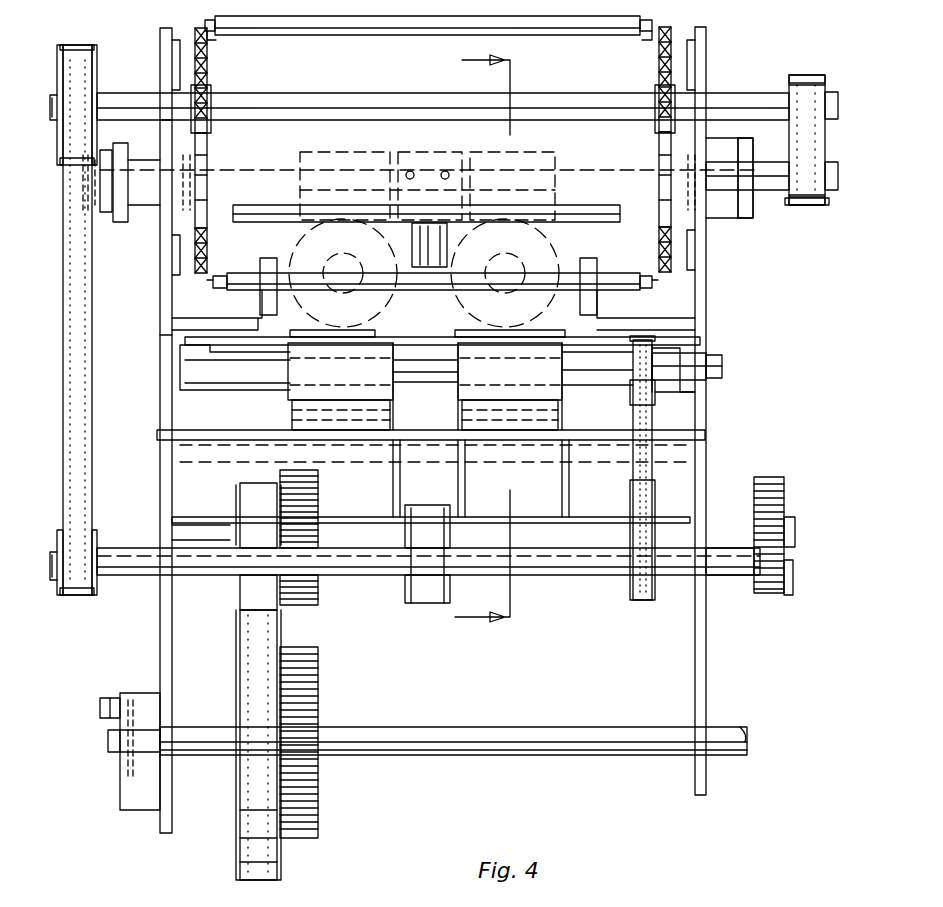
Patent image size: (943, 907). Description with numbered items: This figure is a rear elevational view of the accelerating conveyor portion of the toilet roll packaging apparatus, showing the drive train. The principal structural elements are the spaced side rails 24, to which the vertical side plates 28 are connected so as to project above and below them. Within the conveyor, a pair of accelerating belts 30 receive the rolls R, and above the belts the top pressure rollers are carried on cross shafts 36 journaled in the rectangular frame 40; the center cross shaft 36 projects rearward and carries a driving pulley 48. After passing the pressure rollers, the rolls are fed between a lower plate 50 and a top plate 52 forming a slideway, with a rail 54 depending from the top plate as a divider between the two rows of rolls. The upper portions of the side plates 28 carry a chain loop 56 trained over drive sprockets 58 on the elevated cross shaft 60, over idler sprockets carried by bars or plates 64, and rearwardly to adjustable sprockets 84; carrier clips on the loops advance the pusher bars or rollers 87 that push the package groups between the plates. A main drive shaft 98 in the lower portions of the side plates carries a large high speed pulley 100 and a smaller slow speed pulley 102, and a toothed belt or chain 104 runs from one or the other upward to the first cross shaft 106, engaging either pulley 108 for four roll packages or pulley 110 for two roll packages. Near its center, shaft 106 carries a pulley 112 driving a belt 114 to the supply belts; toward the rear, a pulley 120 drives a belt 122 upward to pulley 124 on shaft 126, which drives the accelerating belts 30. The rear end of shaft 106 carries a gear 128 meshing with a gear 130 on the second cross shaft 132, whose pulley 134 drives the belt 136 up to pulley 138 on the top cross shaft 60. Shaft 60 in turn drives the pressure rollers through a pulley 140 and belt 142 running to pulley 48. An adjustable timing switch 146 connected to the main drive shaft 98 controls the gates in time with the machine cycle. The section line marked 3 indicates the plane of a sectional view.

The section line 3 is at (469, 343).
The side rails 24 is at (693, 353).
The vertical side plates 28 is at (706, 272).
The accelerating belts 30 is at (308, 376).
The cross shafts 36 is at (768, 185).
The rectangular frame 40 is at (742, 135).
The driving pulley 48 is at (822, 205).
The lower plate 50 is at (418, 345).
The top plate 52 is at (268, 214).
The rail 54 is at (432, 240).
The chain loop 56 is at (200, 215).
The drive sprockets 58 is at (210, 80).
The cross shaft 60 is at (350, 110).
The bars or plates 64 is at (178, 52).
The adjustable sprockets 84 is at (198, 270).
The pusher bars or rollers 87 is at (560, 22).
The main drive shaft 98 is at (478, 740).
The high speed pulley 100 is at (240, 865).
The slow speed pulley 102 is at (320, 812).
The toothed belt or chain 104 is at (260, 822).
The first cross shaft 106 is at (195, 520).
The pulley 108 is at (240, 500).
The pulley 110 is at (320, 600).
The pulley 112 is at (415, 520).
The belt 114 is at (410, 610).
The pulley 120 is at (636, 595).
The belt 122 is at (645, 600).
The pulley 124 is at (655, 395).
The shaft 126 is at (612, 372).
The gear 128 is at (778, 485).
The gear 130 is at (790, 596).
The second cross shaft 132 is at (730, 572).
The pulley 134 is at (57, 598).
The belt 136 is at (75, 460).
The pulley 138 is at (62, 48).
The pulley 140 is at (820, 80).
The belt 142 is at (812, 144).
The adjustable timing switch 146 is at (130, 790).
The rolls R is at (555, 245).